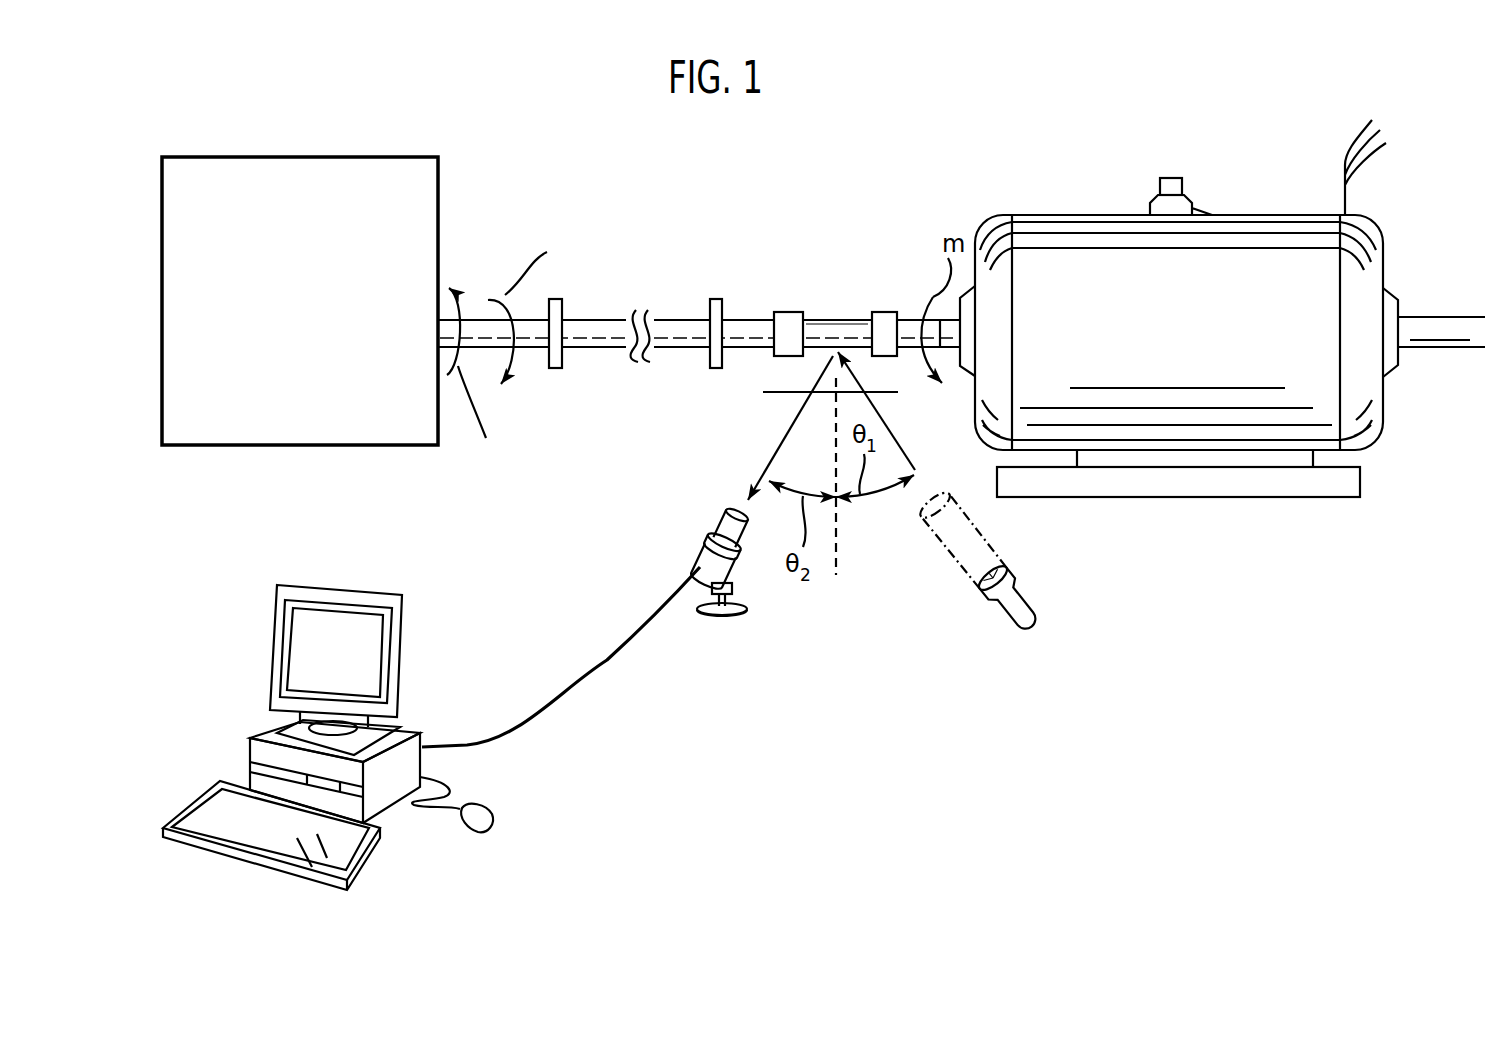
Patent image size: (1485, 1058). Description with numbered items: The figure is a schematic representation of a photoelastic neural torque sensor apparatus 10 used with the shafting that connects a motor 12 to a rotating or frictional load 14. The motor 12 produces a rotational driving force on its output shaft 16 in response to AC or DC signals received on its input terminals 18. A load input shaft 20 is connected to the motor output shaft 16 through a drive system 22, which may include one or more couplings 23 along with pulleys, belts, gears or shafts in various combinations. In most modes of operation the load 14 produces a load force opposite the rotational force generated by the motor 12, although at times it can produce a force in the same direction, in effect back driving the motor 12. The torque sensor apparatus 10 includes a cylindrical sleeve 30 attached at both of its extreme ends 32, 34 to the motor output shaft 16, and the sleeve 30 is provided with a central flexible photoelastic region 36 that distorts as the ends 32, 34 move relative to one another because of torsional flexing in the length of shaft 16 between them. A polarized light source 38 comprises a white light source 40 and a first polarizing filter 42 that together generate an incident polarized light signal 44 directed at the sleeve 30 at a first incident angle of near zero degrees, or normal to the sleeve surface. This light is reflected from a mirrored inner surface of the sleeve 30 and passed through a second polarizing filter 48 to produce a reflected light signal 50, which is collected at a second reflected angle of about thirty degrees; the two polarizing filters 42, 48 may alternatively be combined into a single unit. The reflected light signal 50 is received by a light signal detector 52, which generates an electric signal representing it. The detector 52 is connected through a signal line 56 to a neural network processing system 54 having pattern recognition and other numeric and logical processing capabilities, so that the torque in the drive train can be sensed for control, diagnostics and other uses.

The photoelastic neural torque sensor apparatus 10 is at (845, 155).
The motor 12 is at (1258, 213).
The load 14 is at (302, 315).
The output shaft 16 is at (907, 350).
The input terminals 18 is at (1374, 178).
The load input shaft 20 is at (485, 326).
The drive system 22 is at (631, 298).
The couplings 23 is at (556, 370).
The cylindrical sleeve 30 is at (840, 298).
The first extreme end 32 is at (765, 292).
The second extreme end 34 is at (905, 300).
The central flexible photoelastic region 36 is at (821, 325).
The polarized light source 38 is at (900, 527).
The white light source 40 is at (1022, 608).
The first polarizing filter 42 is at (852, 393).
The incident polarized light signal 44 is at (910, 450).
The second polarizing filter 48 is at (783, 395).
The reflected light signal 50 is at (777, 443).
The light signal detector 52 is at (693, 543).
The neural network processing system 54 is at (353, 577).
The signal line 56 is at (617, 662).